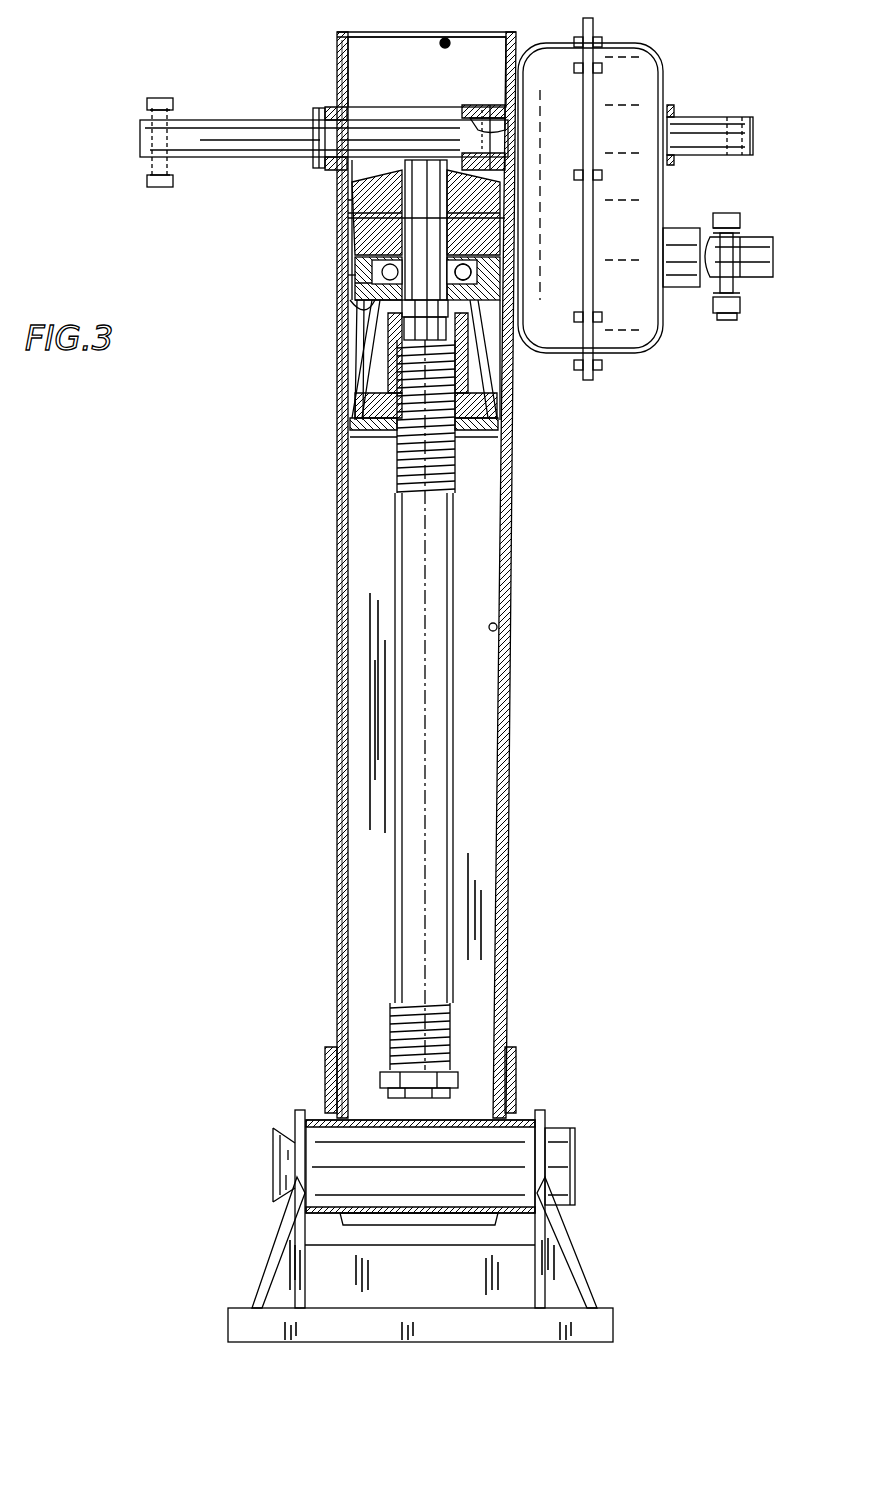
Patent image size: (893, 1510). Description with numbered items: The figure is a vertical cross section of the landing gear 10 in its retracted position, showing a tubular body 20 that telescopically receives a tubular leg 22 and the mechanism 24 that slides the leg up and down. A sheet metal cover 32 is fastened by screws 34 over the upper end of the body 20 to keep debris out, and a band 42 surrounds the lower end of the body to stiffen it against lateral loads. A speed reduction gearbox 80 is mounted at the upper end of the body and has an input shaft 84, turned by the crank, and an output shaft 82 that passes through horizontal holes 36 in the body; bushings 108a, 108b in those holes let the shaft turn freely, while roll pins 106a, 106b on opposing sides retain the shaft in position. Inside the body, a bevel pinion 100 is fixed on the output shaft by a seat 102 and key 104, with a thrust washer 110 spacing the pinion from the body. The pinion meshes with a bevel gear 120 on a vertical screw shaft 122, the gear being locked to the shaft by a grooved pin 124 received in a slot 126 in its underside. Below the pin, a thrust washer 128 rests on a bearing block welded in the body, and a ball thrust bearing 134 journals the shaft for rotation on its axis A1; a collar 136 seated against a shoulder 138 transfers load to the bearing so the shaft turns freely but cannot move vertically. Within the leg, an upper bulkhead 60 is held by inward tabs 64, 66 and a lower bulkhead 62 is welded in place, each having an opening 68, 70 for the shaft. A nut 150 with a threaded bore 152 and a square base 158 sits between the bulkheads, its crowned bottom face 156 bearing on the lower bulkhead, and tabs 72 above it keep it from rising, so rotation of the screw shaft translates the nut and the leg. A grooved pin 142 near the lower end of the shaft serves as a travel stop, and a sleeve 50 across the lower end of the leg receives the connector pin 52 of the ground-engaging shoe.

The landing gear 10 is at (270, 826).
The tubular body 20 is at (510, 575).
The tubular leg 22 is at (500, 627).
The mechanism 24 is at (375, 415).
The sheet metal cover 32 is at (348, 33).
The screws 34 is at (440, 46).
The holes 36 is at (325, 168).
The band 42 is at (515, 1085).
The sleeve 50 is at (540, 1120).
The connector pin 52 is at (580, 1170).
The upper bulkhead 60 is at (345, 283).
The lower bulkhead 62 is at (350, 445).
The tab 64 is at (506, 258).
The tab 66 is at (506, 292).
The opening 68 is at (345, 305).
The opening 70 is at (410, 455).
The tabs 72 is at (506, 382).
The speed reduction gearbox 80 is at (658, 55).
The output shaft 82 is at (755, 134).
The input shaft 84 is at (770, 258).
The bevel pinion 100 is at (490, 100).
The seat 102 is at (460, 108).
The key 104 is at (506, 125).
The roll pin 106a is at (320, 118).
The roll pin 106b is at (672, 112).
The bushing 108a is at (330, 107).
The bushing 108b is at (505, 112).
The thrust washer 110 is at (506, 165).
The bevel gear 120 is at (345, 200).
The screw shaft 122 is at (455, 775).
The grooved pin 124 is at (506, 182).
The slot 126 is at (345, 232).
The thrust washer 128 is at (506, 226).
The ball thrust bearing 134 is at (345, 277).
The collar 136 is at (385, 315).
The shoulder 138 is at (390, 340).
The grooved pin 142 is at (460, 1078).
The nut 150 is at (385, 393).
The bore 152 is at (395, 490).
The bottom face 156 is at (470, 440).
The base 158 is at (495, 428).
The axis A1 is at (425, 897).